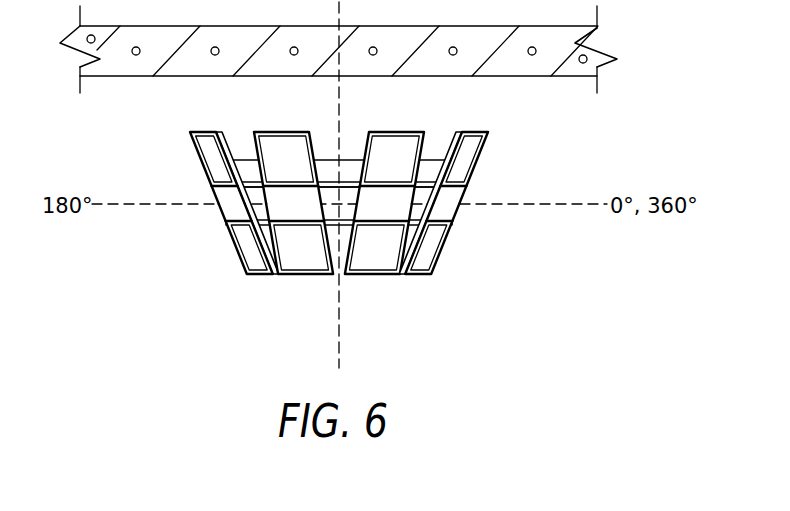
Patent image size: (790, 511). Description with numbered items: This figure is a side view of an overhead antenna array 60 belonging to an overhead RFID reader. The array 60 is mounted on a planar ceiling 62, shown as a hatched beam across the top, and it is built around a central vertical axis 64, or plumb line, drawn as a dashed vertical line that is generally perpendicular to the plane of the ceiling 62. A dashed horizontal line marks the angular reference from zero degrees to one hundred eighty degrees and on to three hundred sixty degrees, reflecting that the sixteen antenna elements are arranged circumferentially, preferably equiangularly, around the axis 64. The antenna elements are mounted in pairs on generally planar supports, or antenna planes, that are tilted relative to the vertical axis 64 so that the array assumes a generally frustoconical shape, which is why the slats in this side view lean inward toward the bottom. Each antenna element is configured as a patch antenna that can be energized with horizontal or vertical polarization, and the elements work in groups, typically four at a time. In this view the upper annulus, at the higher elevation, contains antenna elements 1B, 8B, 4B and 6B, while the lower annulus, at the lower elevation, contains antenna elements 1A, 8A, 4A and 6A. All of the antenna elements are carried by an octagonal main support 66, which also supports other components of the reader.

The overhead antenna array 60 is at (314, 202).
The planar ceiling 62 is at (603, 54).
The central vertical axis 64 is at (339, 328).
The octagonal main support 66 is at (325, 152).
The antenna element 1A is at (252, 253).
The antenna element 1B is at (205, 152).
The antenna element 8A is at (292, 253).
The antenna element 8B is at (282, 145).
The antenna element 4A is at (385, 255).
The antenna element 4B is at (390, 150).
The antenna element 6A is at (428, 240).
The antenna element 6B is at (470, 147).